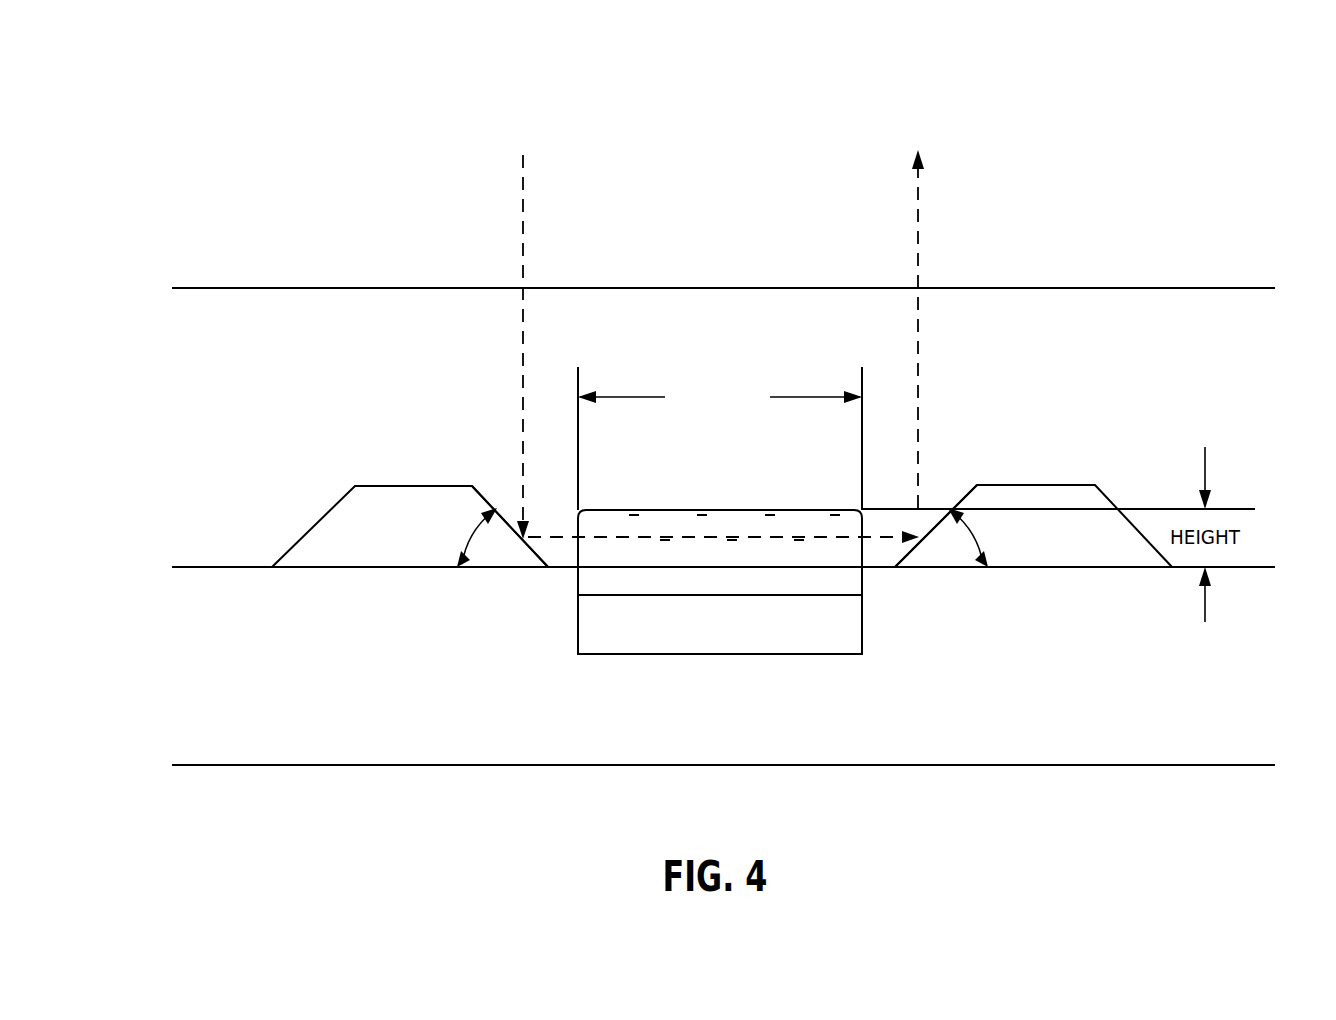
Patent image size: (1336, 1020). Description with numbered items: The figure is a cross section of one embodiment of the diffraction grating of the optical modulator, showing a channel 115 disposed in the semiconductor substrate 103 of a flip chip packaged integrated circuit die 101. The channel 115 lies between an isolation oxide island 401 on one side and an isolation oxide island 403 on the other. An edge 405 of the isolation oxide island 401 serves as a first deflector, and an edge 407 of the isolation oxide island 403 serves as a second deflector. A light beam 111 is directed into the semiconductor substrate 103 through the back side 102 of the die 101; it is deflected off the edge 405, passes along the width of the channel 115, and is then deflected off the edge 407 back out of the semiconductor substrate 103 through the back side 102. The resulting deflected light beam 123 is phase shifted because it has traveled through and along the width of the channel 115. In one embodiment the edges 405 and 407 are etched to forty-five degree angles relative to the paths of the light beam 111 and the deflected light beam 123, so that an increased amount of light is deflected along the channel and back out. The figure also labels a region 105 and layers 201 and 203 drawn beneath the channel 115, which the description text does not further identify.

The flip chip packaged integrated circuit die 101 is at (1250, 218).
The back side 102 is at (1048, 288).
The semiconductor substrate 103 is at (1245, 408).
The substrate layer 105 is at (1180, 678).
The light beam 111 is at (532, 218).
The channel 115 is at (785, 510).
The deflected light beam 123 is at (928, 216).
The gate oxide 201 is at (856, 578).
The gate 203 is at (856, 630).
The isolation oxide island 401 is at (356, 486).
The isolation oxide island 403 is at (1040, 490).
The edge 405 is at (497, 503).
The edge 407 is at (952, 500).